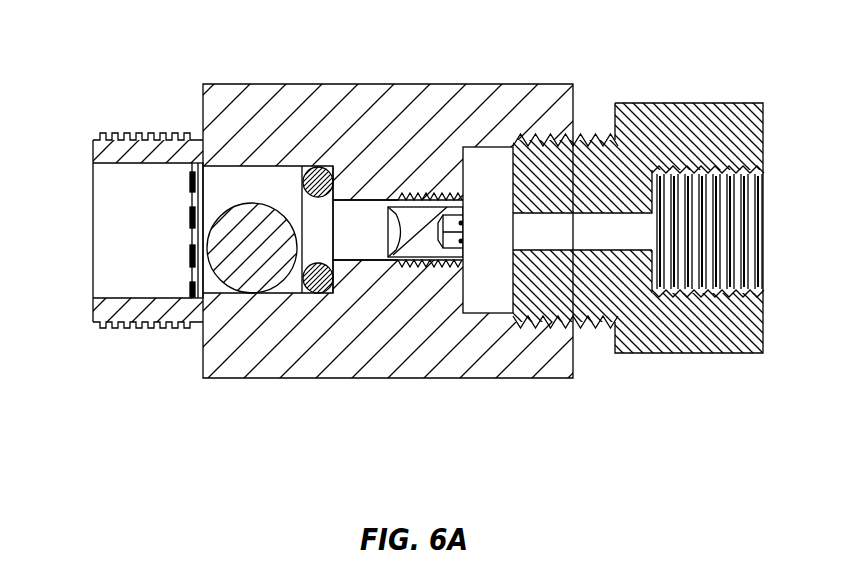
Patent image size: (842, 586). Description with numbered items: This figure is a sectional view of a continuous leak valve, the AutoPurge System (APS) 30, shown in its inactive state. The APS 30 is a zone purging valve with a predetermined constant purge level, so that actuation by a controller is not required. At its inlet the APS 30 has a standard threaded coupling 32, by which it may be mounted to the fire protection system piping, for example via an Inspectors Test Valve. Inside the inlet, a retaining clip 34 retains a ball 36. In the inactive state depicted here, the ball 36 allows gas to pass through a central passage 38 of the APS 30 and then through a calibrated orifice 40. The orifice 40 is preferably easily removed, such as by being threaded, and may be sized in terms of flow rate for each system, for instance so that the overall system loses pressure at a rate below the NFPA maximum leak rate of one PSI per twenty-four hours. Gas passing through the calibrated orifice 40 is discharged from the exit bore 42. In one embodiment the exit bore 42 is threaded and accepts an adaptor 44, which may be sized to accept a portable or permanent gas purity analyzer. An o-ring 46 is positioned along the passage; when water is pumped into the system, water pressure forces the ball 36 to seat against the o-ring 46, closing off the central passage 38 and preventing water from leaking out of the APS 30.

The AutoPurge System (APS) 30 is at (440, 84).
The threaded coupling 32 is at (133, 132).
The retaining clip 34 is at (198, 282).
The ball 36 is at (258, 272).
The central passage 38 is at (360, 227).
The calibrated orifice 40 is at (423, 265).
The exit bore 42 is at (496, 200).
The adaptor 44 is at (680, 360).
The o-ring 46 is at (322, 285).